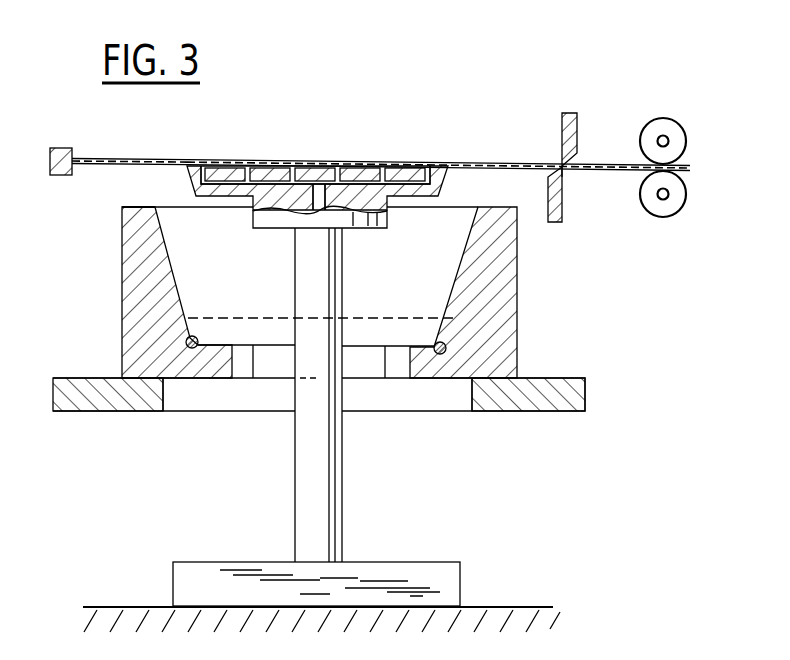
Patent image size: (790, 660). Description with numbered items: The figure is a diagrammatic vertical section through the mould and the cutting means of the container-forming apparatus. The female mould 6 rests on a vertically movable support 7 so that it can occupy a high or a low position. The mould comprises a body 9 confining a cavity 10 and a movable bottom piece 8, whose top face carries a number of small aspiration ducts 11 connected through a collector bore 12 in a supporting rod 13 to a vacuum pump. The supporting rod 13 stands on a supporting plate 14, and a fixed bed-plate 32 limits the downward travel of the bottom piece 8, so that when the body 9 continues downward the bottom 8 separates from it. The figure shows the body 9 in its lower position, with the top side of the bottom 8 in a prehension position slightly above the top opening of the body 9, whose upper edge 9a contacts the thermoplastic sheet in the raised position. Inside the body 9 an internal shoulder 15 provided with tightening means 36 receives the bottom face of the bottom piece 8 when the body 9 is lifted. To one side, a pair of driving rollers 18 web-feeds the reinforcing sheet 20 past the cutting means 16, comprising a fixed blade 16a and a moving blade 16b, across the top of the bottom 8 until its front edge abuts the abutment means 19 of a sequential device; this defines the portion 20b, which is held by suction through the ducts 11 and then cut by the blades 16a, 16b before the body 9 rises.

The female mould 6 is at (525, 312).
The support 7 is at (560, 400).
The bottom piece of the mould 8 is at (447, 184).
The body of the mould 9 is at (130, 279).
The upper edge of the mould 9a is at (139, 204).
The cavity 10 is at (316, 228).
The aspiration ducts 11 is at (250, 163).
The collector bore 12 is at (318, 184).
The supporting rod 13 is at (302, 456).
The supporting plate 14 is at (425, 570).
The internal shoulder 15 is at (214, 337).
The cutting means 16 is at (556, 154).
The fixed blade 16a is at (568, 113).
The moving blade 16b is at (563, 216).
The driving rollers 18 is at (662, 118).
The abutment means 19 is at (67, 147).
The reinforcing sheet 20 is at (598, 163).
The portion of the reinforcing sheet 20b is at (114, 158).
The fixed bed-plate 32 is at (499, 619).
The tightening means 36 is at (436, 343).